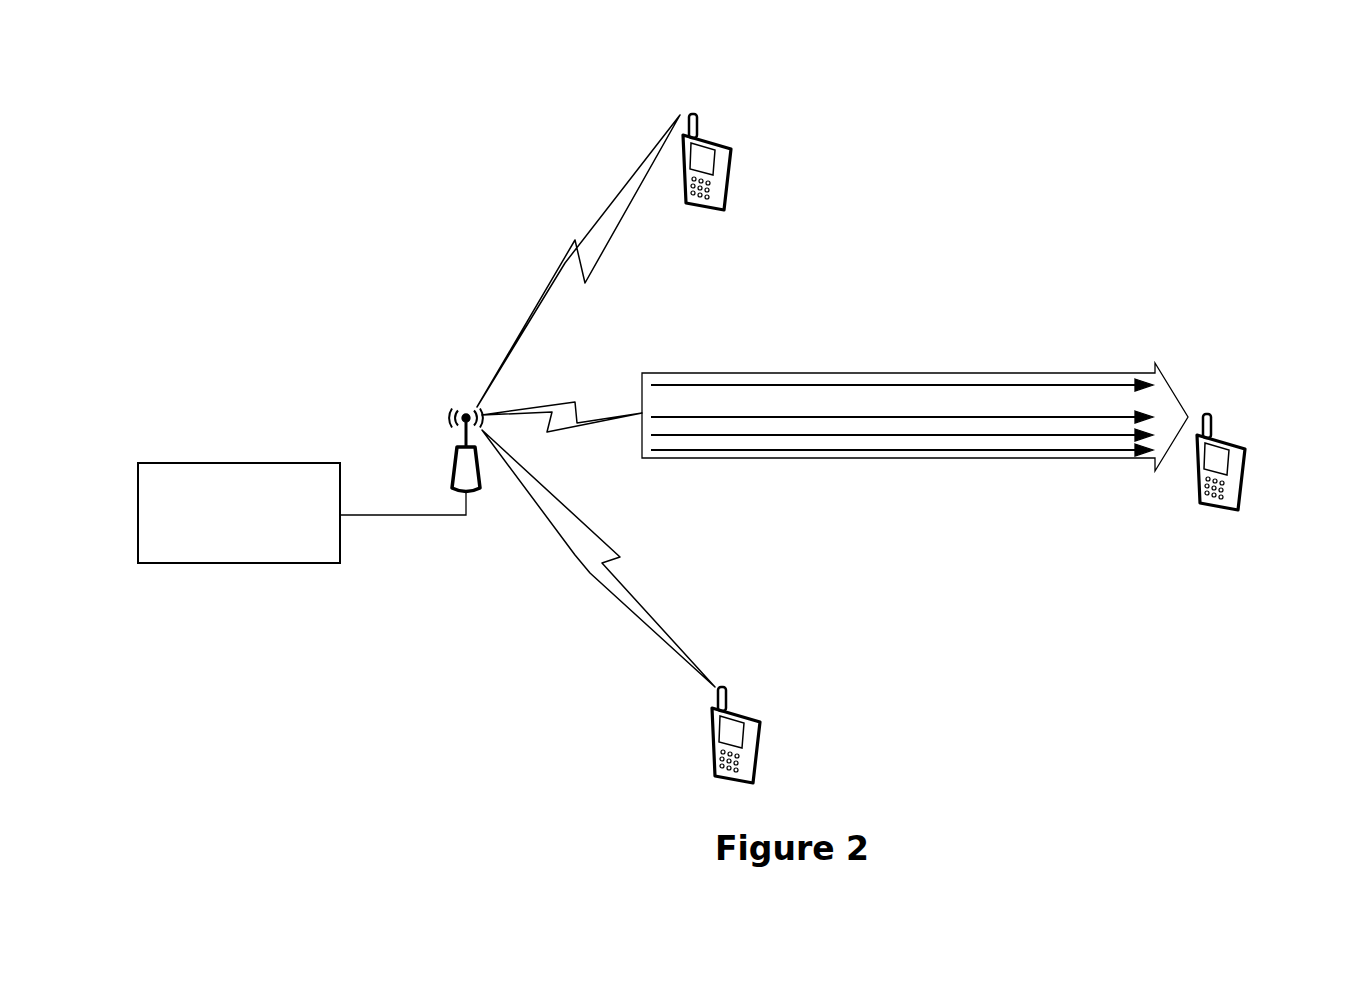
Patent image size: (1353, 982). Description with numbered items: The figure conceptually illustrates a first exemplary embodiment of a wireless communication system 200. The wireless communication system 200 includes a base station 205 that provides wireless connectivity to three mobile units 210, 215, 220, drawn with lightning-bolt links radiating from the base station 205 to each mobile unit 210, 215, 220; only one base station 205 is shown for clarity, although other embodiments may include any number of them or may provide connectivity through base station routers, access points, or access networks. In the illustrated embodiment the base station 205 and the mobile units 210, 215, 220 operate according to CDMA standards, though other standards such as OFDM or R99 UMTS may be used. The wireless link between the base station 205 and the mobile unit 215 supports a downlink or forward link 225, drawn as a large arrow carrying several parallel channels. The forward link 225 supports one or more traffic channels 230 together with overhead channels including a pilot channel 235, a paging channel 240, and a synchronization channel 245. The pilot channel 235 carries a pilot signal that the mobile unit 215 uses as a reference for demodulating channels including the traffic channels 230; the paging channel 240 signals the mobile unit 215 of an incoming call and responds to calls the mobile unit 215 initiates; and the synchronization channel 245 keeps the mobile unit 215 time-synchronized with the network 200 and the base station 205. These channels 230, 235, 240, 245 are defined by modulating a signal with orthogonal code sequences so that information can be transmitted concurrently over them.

The wireless communication system 200 is at (1154, 108).
The base station 205 is at (310, 486).
The mobile unit 210 is at (716, 212).
The mobile unit 215 is at (1230, 512).
The mobile unit 220 is at (760, 752).
The forward link 225 is at (945, 373).
The traffic channel 230 is at (785, 385).
The pilot channel 235 is at (1092, 417).
The paging channel 240 is at (995, 435).
The synchronization channel 245 is at (870, 450).